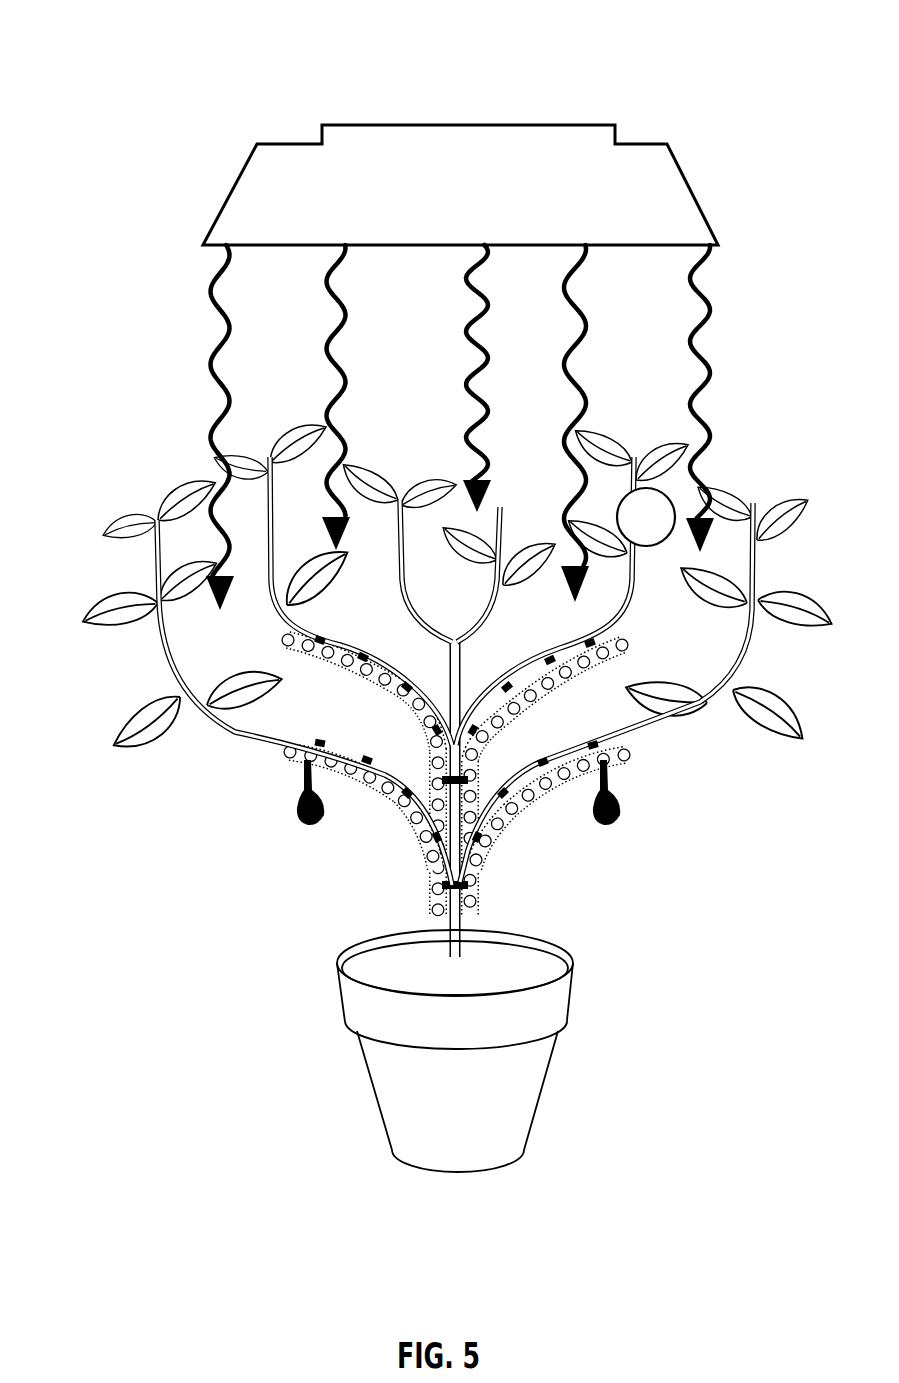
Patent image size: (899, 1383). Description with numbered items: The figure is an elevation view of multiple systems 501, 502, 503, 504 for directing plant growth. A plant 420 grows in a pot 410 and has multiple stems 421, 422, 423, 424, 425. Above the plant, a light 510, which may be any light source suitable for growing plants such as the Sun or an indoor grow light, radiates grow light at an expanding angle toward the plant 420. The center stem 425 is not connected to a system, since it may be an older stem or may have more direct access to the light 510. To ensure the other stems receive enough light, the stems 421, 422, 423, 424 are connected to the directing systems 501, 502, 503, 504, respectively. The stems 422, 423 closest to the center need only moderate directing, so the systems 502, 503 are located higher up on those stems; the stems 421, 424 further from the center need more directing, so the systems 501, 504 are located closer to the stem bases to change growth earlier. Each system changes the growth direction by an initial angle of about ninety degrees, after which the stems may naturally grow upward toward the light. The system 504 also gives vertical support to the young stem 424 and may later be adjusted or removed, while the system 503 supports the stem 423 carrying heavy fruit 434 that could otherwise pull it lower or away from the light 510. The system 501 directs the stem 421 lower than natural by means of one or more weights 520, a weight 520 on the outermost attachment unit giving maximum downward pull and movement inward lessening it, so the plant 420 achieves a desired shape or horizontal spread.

The light 510 is at (505, 167).
The plant 420 is at (105, 350).
The stem 421 is at (103, 510).
The stem 422 is at (245, 455).
The stem 423 is at (615, 430).
The stem 424 is at (790, 520).
The center stem 425 is at (398, 480).
The fruit 434 is at (690, 440).
The system for directing plant growth 501 is at (400, 830).
The system for directing plant growth 502 is at (369, 673).
The system for directing plant growth 503 is at (603, 638).
The system for directing plant growth 504 is at (493, 870).
The weight 520 is at (303, 807).
The pot 410 is at (480, 1138).